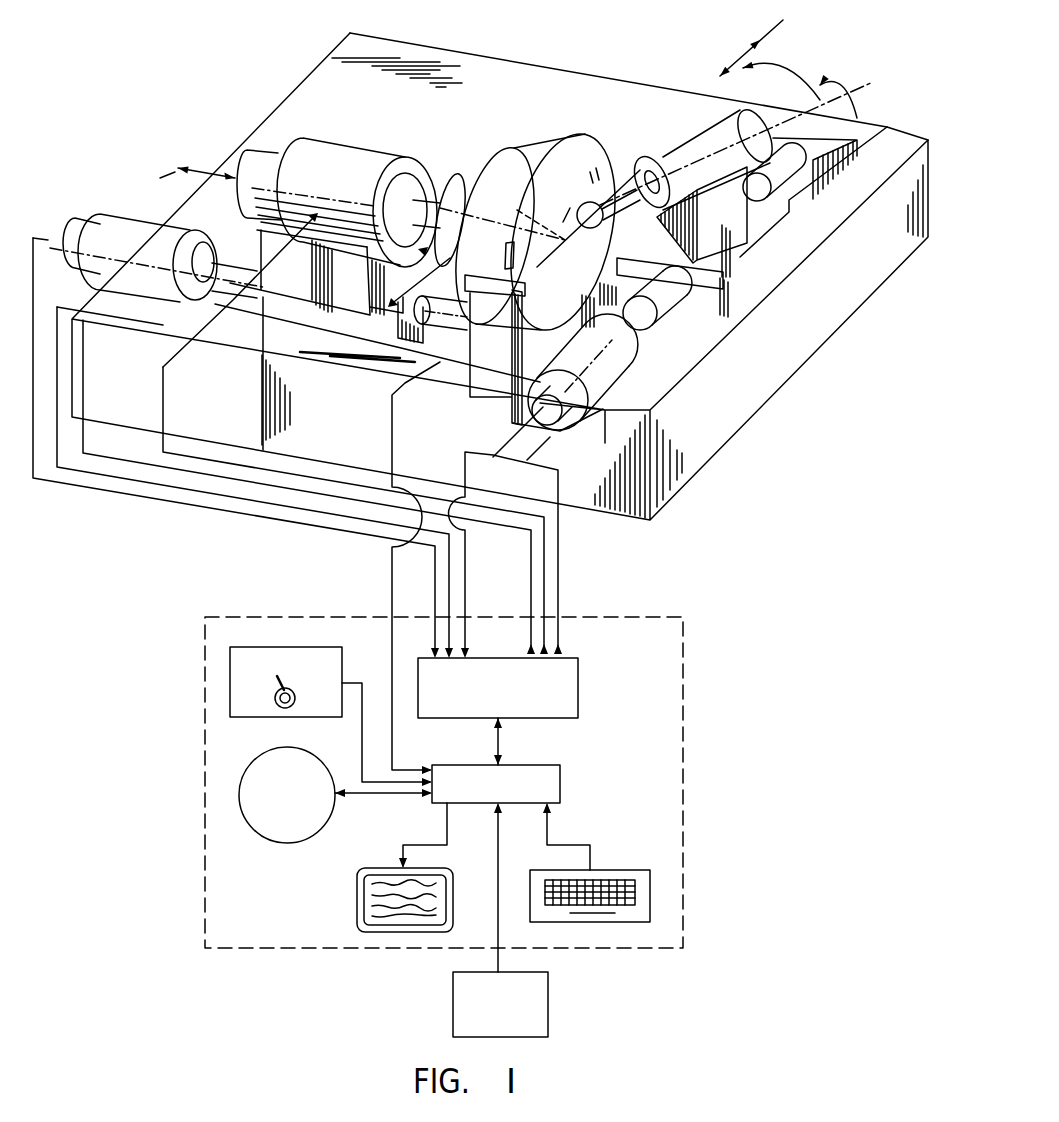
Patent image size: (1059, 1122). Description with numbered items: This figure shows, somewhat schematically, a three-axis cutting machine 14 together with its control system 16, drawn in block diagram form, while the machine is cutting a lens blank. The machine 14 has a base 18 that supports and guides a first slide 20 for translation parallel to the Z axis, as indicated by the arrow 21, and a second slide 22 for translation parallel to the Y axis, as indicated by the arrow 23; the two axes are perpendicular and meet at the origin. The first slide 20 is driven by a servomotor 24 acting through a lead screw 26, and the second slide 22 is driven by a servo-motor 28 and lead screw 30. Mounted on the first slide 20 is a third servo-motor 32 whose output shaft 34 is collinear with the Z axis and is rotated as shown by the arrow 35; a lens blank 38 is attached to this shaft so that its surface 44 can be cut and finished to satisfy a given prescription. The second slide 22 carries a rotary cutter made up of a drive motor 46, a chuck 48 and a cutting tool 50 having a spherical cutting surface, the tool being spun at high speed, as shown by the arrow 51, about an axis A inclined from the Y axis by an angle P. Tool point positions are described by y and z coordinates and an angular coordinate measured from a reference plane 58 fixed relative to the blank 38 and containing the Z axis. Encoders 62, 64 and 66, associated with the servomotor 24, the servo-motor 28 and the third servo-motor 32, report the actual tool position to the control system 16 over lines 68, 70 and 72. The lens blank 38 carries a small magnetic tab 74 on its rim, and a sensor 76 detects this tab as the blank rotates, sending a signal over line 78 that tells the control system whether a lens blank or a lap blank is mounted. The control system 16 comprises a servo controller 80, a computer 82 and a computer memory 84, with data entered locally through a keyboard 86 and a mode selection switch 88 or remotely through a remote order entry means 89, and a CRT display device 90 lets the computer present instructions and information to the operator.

The three-axis cutting machine 14 is at (561, 53).
The control system 16 is at (696, 627).
The base 18 is at (772, 367).
The first slide 20 is at (297, 296).
The arrow 21 is at (213, 165).
The second slide 22 is at (777, 228).
The arrow 23 is at (735, 52).
The servomotor 24 is at (163, 272).
The lead screw 26 is at (205, 290).
The servo-motor 28 is at (610, 340).
The lead screw 30 is at (660, 296).
The third servo-motor 32 is at (325, 157).
The output shaft 34 is at (437, 210).
The arrow 35 is at (435, 205).
The lens blank 38 is at (578, 140).
The surface 44 is at (589, 158).
The drive motor 46 is at (720, 128).
The chuck 48 is at (650, 172).
The cutting tool 50 is at (608, 211).
The arrow 51 is at (850, 95).
The reference plane 58 is at (578, 220).
The encoder 62 is at (72, 230).
The encoder 64 is at (555, 380).
The encoder 66 is at (258, 157).
The line 68 is at (172, 496).
The line 70 is at (468, 556).
The line 72 is at (266, 503).
The tab 74 is at (505, 255).
The sensor 76 is at (500, 302).
The line 78 is at (392, 573).
The servo controller 80 is at (568, 657).
The computer 82 is at (540, 763).
The computer memory 84 is at (328, 808).
The keyboard 86 is at (617, 870).
The mode selection switch 88 is at (310, 645).
The remote order entry means 89 is at (530, 971).
The CRT display device 90 is at (357, 888).